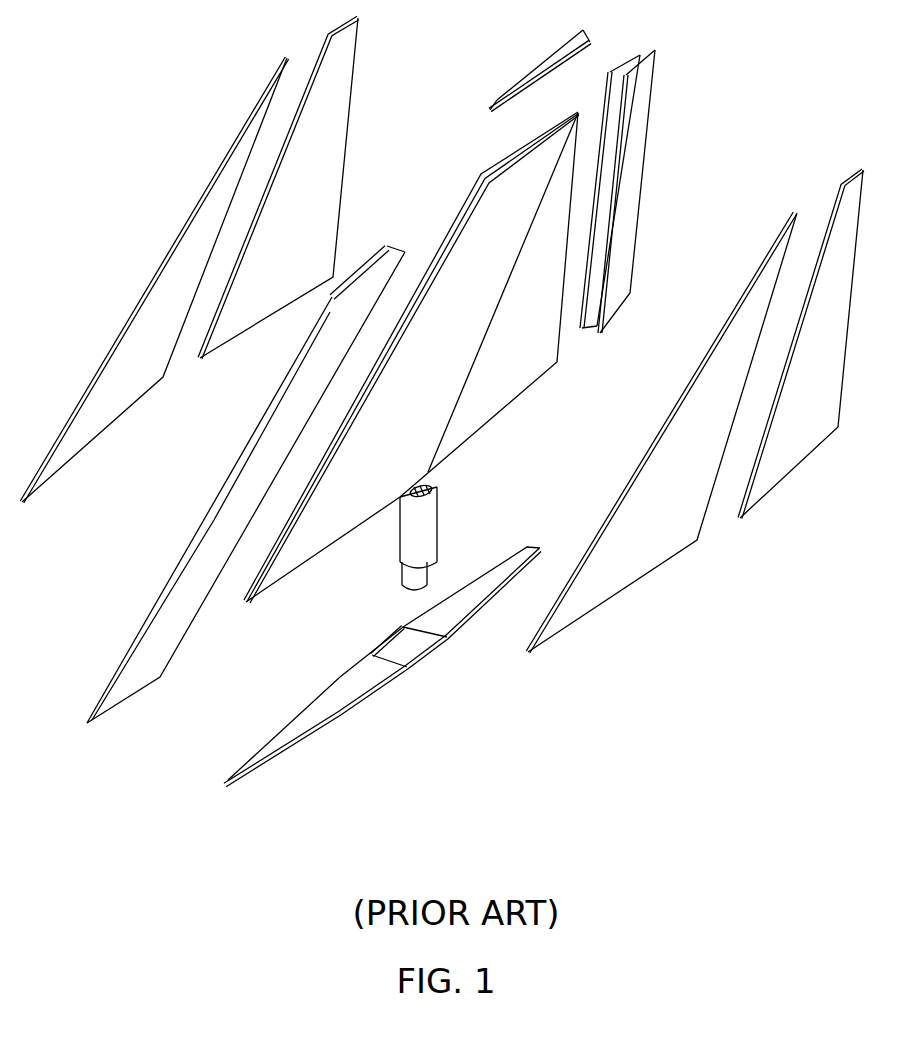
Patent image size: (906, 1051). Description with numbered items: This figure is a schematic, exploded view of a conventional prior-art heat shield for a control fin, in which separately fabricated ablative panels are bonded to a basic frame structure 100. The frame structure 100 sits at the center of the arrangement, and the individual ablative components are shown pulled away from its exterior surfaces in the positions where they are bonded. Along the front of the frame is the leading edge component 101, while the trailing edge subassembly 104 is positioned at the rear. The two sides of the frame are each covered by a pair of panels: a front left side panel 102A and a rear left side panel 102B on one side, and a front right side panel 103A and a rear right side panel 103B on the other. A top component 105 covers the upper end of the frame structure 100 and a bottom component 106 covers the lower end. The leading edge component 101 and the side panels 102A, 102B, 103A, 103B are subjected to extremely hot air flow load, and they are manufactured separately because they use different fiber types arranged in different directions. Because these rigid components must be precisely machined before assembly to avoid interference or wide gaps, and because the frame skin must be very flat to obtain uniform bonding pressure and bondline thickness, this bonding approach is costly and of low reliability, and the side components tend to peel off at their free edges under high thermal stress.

The frame structure 100 is at (503, 228).
The leading edge component 101 is at (273, 472).
The front left side panel 102A is at (183, 277).
The rear left side panel 102B is at (343, 63).
The front right side panel 103A is at (680, 508).
The rear right side panel 103B is at (800, 428).
The trailing edge subassembly 104 is at (632, 185).
The top component 105 is at (525, 73).
The bottom component 106 is at (333, 703).